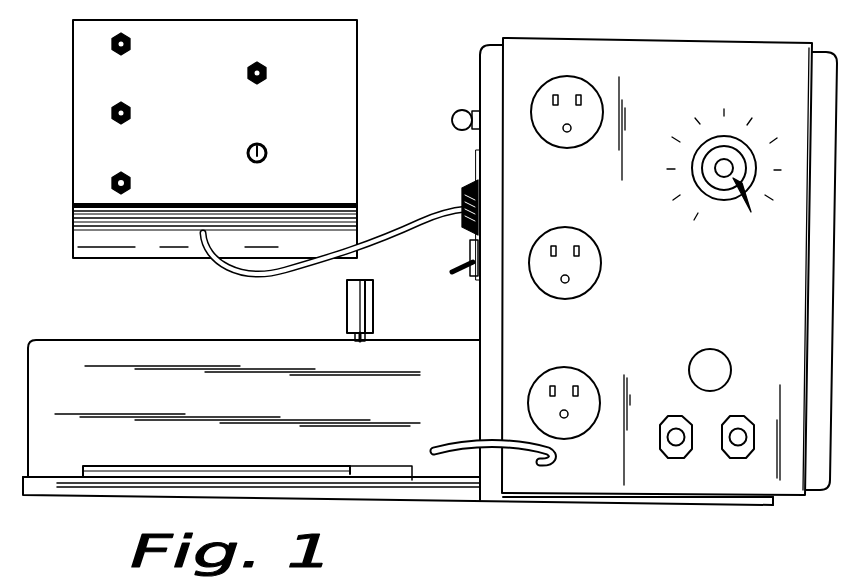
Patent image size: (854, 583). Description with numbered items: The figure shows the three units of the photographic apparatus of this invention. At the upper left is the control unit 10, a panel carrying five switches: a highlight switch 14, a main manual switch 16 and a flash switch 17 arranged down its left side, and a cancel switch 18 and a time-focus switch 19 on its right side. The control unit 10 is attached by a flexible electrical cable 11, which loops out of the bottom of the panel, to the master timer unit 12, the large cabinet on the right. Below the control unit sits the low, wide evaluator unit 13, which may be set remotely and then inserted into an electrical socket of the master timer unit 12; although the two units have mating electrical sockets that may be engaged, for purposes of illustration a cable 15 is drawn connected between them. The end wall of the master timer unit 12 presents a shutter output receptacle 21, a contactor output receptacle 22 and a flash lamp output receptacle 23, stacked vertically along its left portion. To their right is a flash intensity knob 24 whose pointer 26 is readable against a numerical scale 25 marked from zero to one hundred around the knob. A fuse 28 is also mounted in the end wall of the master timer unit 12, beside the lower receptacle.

The control unit 10 is at (305, 36).
The flexible electrical cable 11 is at (402, 218).
The master timer unit 12 is at (470, 62).
The evaluator unit 13 is at (175, 310).
The highlight switch 14 is at (110, 44).
The cable 15 is at (520, 461).
The main manual switch 16 is at (110, 113).
The flash switch 17 is at (110, 182).
The cancel switch 18 is at (258, 64).
The time-focus switch 19 is at (259, 146).
The shutter output receptacle 21 is at (551, 130).
The contactor output receptacle 22 is at (595, 262).
The flash lamp output receptacle 23 is at (580, 425).
The flash intensity knob 24 is at (723, 178).
The numerical scale 25 is at (781, 227).
The pointer 26 is at (740, 203).
The fuse 28 is at (716, 360).